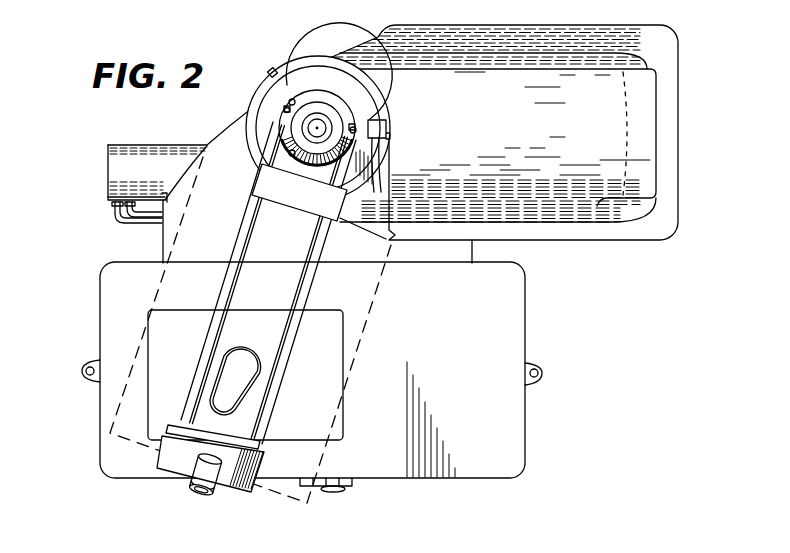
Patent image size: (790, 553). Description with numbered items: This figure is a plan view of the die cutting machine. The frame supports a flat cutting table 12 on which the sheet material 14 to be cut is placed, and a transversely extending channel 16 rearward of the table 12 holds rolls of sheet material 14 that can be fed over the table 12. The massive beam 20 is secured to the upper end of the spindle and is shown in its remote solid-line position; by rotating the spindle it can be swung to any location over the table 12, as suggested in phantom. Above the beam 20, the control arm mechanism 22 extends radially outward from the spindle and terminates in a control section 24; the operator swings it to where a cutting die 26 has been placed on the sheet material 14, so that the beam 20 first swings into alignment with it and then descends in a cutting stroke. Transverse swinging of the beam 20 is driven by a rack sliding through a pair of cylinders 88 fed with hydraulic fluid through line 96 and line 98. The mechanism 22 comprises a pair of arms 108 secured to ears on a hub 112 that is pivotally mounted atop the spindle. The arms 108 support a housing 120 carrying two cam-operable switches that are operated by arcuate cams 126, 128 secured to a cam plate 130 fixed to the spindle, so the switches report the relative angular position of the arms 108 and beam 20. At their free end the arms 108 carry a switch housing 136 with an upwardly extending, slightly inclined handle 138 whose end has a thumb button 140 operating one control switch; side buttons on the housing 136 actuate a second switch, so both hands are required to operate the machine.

The cutting table 12 is at (510, 303).
The sheet material 14 is at (340, 433).
The channel 16 is at (456, 252).
The beam 20 is at (498, 88).
The control arm mechanism 22 is at (241, 165).
The control section 24 is at (165, 464).
The cutting die 26 is at (233, 343).
The cylinders 88 is at (163, 163).
The line 96 is at (142, 219).
The line 98 is at (114, 217).
The arms 108 is at (307, 280).
The hub 112 is at (312, 100).
The housing 120 is at (288, 192).
The arcuate cam 126 is at (389, 151).
The arcuate cam 128 is at (303, 56).
The cam plate 130 is at (287, 82).
The switch housing 136 is at (262, 486).
The handle 138 is at (209, 477).
The thumb button 140 is at (202, 495).